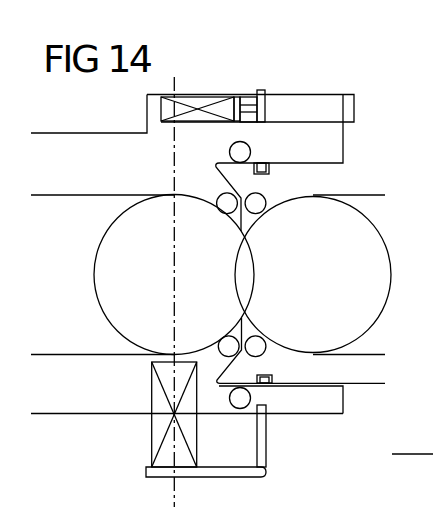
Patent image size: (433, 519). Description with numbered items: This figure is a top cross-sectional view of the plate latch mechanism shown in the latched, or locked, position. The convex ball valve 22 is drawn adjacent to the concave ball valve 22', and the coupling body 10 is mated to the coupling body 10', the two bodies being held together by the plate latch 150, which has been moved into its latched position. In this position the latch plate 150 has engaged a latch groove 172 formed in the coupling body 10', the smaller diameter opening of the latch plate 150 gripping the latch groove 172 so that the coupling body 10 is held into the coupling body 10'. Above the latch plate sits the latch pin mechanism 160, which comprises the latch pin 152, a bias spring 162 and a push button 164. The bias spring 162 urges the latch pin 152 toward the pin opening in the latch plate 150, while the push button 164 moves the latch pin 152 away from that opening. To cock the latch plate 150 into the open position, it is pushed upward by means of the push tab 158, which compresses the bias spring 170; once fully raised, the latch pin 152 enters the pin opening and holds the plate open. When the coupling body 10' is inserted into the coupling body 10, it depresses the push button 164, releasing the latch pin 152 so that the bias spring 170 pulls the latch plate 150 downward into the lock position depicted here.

The coupling body 10 is at (187, 254).
The coupling body 10' is at (373, 324).
The convex ball valve 22 is at (155, 275).
The concave ball valve 22' is at (329, 275).
The plate latch 150 is at (262, 108).
The latch pin 152 is at (248, 108).
The push tab 158 is at (213, 473).
The latch pin mechanism 160 is at (186, 72).
The bias spring 162 is at (198, 108).
The push button 164 is at (349, 102).
The bias spring 170 is at (158, 428).
The latch groove 172 is at (268, 173).